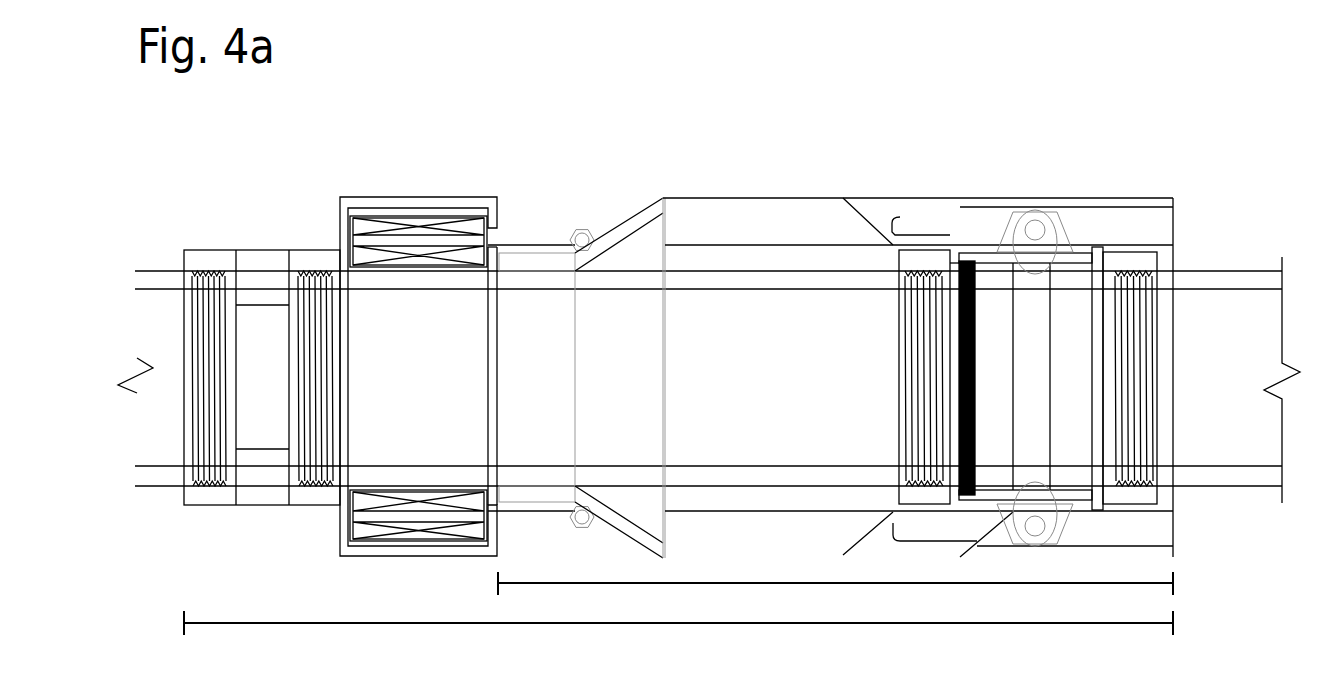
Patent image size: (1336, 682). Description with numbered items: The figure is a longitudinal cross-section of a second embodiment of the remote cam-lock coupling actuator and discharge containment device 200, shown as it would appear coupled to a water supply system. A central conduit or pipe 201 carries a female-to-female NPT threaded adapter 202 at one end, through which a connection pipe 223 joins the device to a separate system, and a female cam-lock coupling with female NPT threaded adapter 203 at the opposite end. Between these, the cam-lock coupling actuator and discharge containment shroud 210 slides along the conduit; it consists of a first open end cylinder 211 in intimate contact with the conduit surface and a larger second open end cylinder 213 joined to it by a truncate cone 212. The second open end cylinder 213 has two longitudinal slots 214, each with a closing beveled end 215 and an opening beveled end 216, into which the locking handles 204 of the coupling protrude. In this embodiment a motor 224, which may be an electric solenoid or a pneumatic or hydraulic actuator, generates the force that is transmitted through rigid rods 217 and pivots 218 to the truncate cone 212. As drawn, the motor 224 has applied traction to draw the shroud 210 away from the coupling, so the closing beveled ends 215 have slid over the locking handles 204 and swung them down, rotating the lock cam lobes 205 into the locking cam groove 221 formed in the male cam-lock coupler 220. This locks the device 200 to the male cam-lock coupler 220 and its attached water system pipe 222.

The remote cam-lock coupling actuator and discharge containment device 200 is at (678, 633).
The cam-lock coupling actuator and discharge containment shroud 210 is at (835, 593).
The central conduit or pipe 201 is at (463, 324).
The female-to-female NPT threaded adapter 202 is at (268, 324).
The female cam-lock coupling with female NPT threaded adapter 203 is at (1021, 322).
The locking handles 204 is at (924, 324).
The lock cam lobes 205 is at (1045, 345).
The first open end cylinder 211 is at (537, 323).
The truncate cone 212 is at (623, 351).
The second open end cylinder 213 is at (918, 350).
The longitudinal slots 214 is at (925, 342).
The closing (locking) beveled ends 215 is at (1039, 315).
The opening (unlocking) beveled ends 216 is at (921, 350).
The rigid rods 217 is at (531, 327).
The pivots 218 is at (595, 335).
The male cam-lock coupler 220 is at (1172, 335).
The locking cam groove 221 is at (1082, 327).
The water system pipe 222 is at (709, 347).
The connection pipe 223 is at (242, 324).
The motor 224 is at (418, 350).